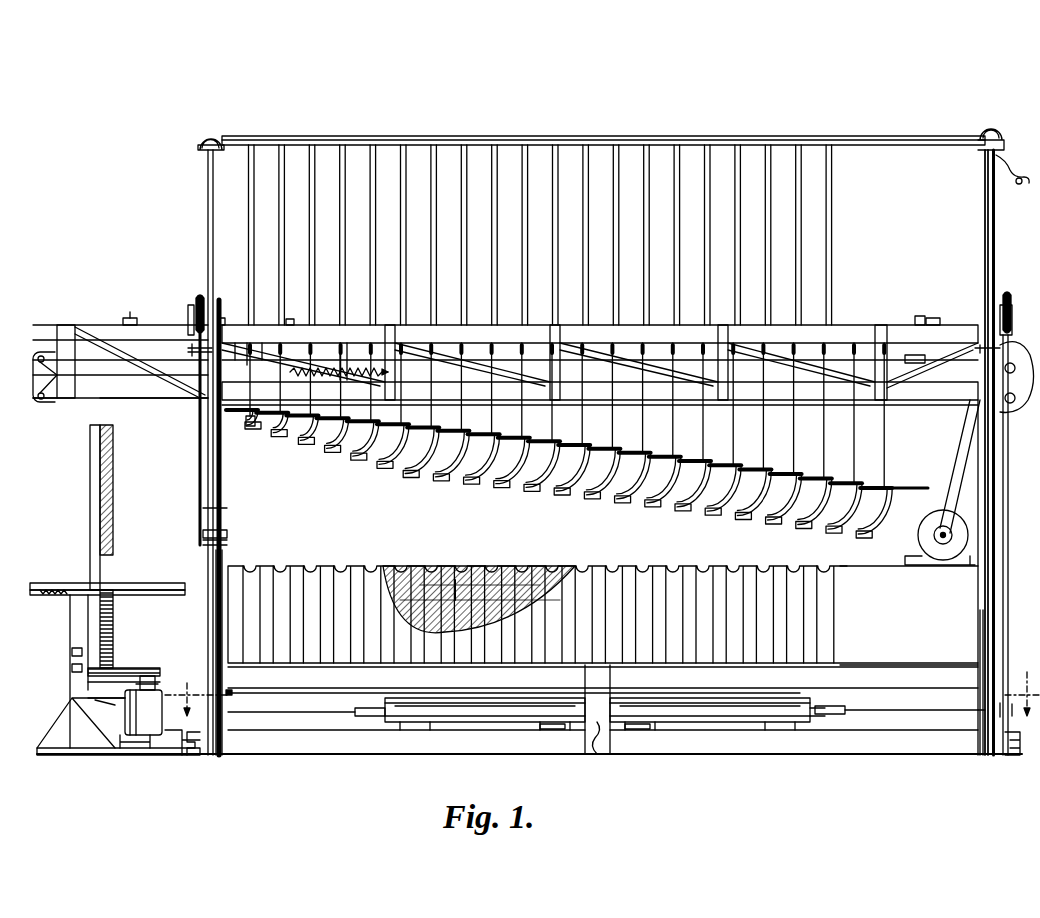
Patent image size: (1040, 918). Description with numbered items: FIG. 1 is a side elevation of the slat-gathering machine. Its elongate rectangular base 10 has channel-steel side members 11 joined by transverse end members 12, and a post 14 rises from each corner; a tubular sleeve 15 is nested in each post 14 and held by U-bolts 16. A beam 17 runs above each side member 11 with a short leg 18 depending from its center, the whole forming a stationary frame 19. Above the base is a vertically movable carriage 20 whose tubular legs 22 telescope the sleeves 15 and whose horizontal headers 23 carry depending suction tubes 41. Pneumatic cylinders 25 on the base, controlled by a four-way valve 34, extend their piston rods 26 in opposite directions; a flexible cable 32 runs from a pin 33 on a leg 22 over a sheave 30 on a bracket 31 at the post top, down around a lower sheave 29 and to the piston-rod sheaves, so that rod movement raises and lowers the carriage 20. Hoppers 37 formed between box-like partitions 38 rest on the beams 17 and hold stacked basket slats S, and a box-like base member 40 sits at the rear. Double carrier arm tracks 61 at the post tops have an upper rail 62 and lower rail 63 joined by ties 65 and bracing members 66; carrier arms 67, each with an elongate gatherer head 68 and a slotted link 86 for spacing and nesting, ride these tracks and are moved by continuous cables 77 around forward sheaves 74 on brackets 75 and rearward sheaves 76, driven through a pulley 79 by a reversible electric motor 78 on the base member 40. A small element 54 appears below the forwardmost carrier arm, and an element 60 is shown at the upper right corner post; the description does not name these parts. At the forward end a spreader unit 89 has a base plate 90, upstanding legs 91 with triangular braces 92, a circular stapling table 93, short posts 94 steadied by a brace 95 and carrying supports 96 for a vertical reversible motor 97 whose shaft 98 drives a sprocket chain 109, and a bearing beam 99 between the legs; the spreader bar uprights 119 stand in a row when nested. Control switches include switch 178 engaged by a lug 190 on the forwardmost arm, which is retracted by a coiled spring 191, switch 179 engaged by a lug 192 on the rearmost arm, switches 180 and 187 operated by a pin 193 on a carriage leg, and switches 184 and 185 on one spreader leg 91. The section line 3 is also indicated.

The base 10 is at (328, 754).
The side members 11 is at (688, 754).
The end members 12 is at (224, 738).
The post 14 is at (200, 502).
The tubular sleeve 15 is at (224, 552).
The U-bolts 16 is at (228, 690).
The beam 17 is at (862, 668).
The leg 18 is at (594, 724).
The stationary frame 19 is at (264, 503).
The carriage 20 is at (984, 187).
The tubular leg 22 is at (207, 212).
The headers 23 is at (744, 134).
The pneumatic cylinders 25 is at (456, 729).
The piston rods 26 is at (818, 720).
The sheave 29 is at (985, 722).
The sheave 30 is at (196, 296).
The bracket 31 is at (191, 303).
The flexible cable 32 is at (274, 712).
The pin 33 is at (192, 347).
The four-way pneumatic valve 34 is at (620, 698).
The hoppers 37 is at (603, 597).
The partitions 38 is at (526, 564).
The base member 40 is at (946, 656).
The suction tubes 41 is at (832, 205).
The pad 54 is at (246, 426).
The hook 60 is at (1020, 182).
The carrier arm tracks 61 is at (856, 325).
The upper rail 62 is at (521, 339).
The lower rail 63 is at (155, 398).
The ties 65 is at (748, 327).
The bracing members 66 is at (496, 344).
The carrier arms 67 is at (926, 421).
The gatherer head 68 is at (577, 440).
The sheaves 74 is at (36, 360).
The brackets 75 is at (46, 400).
The sheaves 76 is at (1018, 371).
The cables 77 is at (966, 366).
The electric motor 78 is at (918, 548).
The pulley 79 is at (944, 566).
The slotted link 86 is at (905, 488).
The spreader unit 89 is at (90, 580).
The base plate 90 is at (100, 754).
The legs 91 is at (68, 618).
The braces 92 is at (58, 726).
The stapling table 93 is at (152, 590).
The posts 94 is at (121, 746).
The brace 95 is at (92, 698).
The supports 96 is at (170, 748).
The electric motor 97 is at (160, 710).
The shaft 98 is at (156, 684).
The bearing beam 99 is at (123, 668).
The sprocket chain 109 is at (130, 680).
The upright 119 is at (90, 488).
The switch 178 is at (128, 313).
The switch 179 is at (918, 316).
The switch 180 is at (222, 324).
The switch 184 is at (70, 648).
The switch 185 is at (70, 668).
The switch 187 is at (226, 530).
The lug 190 is at (287, 319).
The coiled spring 191 is at (350, 342).
The lug 192 is at (916, 331).
The pin 193 is at (228, 365).
The section line 3 is at (602, 680).
The basket slats S is at (460, 566).